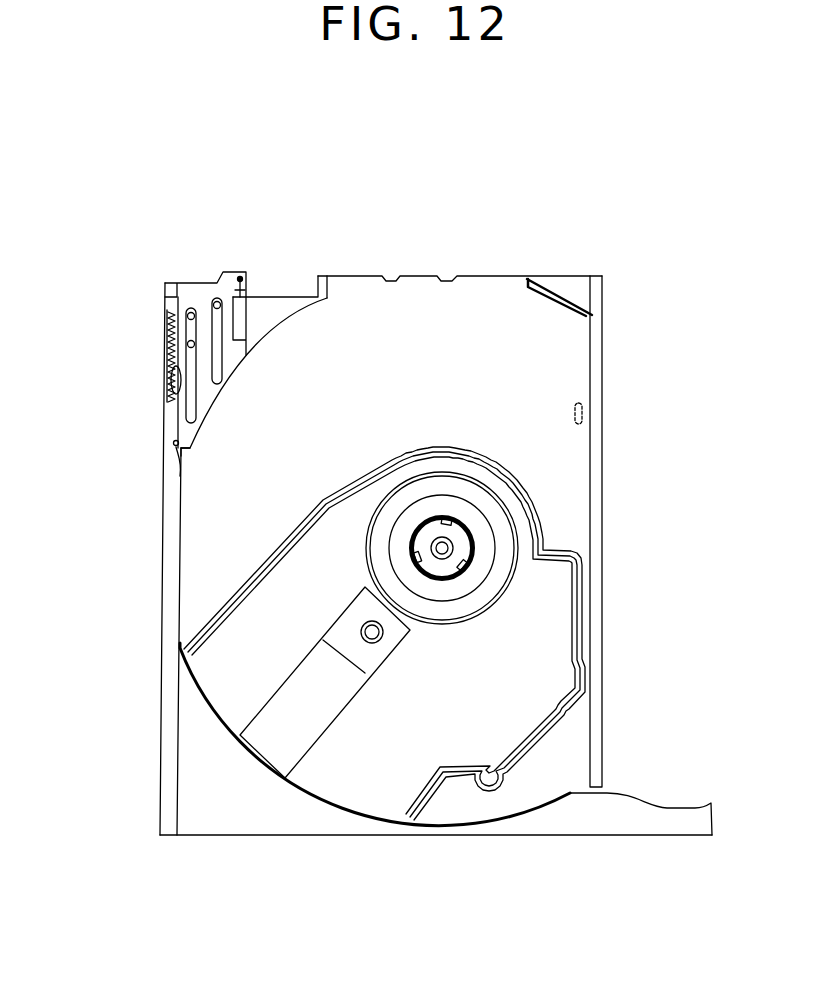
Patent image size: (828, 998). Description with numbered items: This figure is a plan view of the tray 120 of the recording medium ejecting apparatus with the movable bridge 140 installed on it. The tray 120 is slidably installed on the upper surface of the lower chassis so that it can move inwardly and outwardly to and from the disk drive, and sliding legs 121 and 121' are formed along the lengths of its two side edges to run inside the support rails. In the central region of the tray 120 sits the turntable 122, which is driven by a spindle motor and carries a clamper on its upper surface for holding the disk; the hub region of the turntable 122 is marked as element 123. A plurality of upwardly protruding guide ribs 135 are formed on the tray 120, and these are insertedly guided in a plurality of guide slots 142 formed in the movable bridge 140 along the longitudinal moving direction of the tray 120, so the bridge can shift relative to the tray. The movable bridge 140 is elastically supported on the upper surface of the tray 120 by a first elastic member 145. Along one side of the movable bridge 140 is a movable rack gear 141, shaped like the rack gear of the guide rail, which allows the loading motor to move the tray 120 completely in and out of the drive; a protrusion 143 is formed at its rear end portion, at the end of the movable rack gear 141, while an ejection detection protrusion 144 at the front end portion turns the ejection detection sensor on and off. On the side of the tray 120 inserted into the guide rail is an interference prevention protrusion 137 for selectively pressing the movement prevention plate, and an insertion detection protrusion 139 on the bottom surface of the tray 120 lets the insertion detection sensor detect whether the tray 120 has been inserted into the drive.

The tray 120 is at (235, 813).
The sliding leg 121 is at (112, 559).
The sliding leg 121' is at (658, 531).
The turntable 122 is at (442, 505).
The clamping ring 123 is at (470, 562).
The guide ribs 135 is at (217, 300).
The interference prevention protrusion 137 is at (180, 465).
The insertion detection protrusion 139 is at (599, 412).
The movable bridge 140 is at (181, 447).
The movable rack gear 141 is at (172, 384).
The guide slots 142 is at (193, 400).
The protrusion 143 is at (170, 312).
The ejection detection protrusion 144 is at (178, 446).
The first elastic member 145 is at (238, 310).